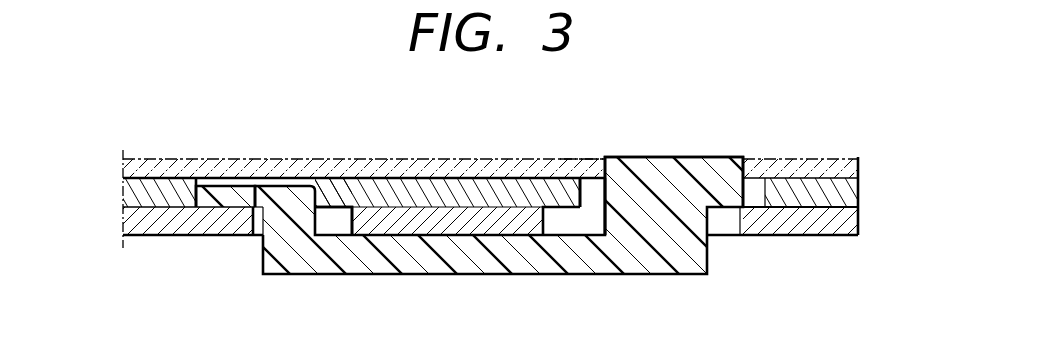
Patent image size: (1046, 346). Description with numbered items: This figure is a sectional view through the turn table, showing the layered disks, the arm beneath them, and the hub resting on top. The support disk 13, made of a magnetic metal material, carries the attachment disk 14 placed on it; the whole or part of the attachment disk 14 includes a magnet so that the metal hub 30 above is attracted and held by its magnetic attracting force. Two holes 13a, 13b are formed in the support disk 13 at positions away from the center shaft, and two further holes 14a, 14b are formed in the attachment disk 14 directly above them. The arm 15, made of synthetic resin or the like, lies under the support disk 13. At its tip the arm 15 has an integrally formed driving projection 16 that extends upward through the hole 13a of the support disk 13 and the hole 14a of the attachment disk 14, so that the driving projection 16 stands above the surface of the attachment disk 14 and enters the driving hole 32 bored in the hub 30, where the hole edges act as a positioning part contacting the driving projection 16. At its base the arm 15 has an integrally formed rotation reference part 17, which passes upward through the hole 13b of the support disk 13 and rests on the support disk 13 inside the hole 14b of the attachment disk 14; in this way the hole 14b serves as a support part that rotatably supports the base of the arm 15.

The support disk 13 is at (182, 220).
The hole 13a is at (722, 222).
The hole 13b is at (338, 222).
The attachment disk 14 is at (387, 190).
The hole 14a is at (592, 185).
The hole 14b is at (325, 192).
The arm 15 is at (463, 258).
The driving projection 16 is at (673, 168).
The rotation reference part 17 is at (245, 193).
The hub 30 is at (463, 170).
The driving hole 32 is at (588, 157).